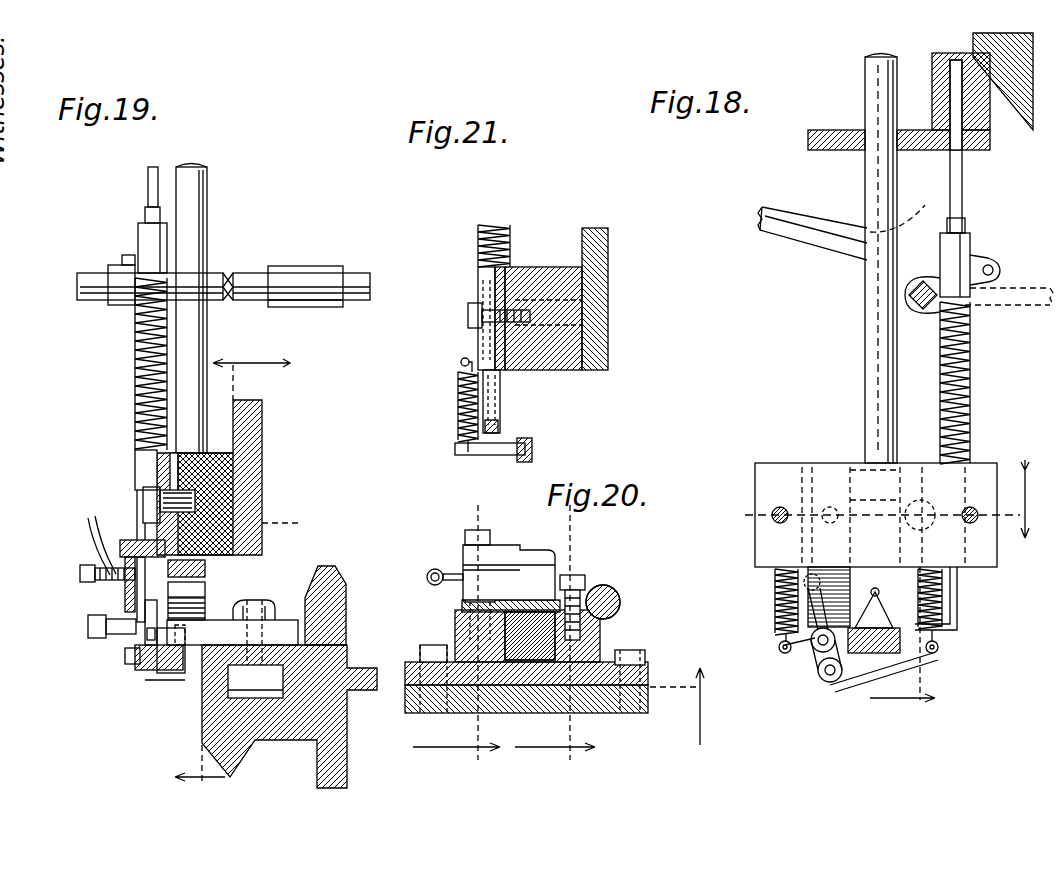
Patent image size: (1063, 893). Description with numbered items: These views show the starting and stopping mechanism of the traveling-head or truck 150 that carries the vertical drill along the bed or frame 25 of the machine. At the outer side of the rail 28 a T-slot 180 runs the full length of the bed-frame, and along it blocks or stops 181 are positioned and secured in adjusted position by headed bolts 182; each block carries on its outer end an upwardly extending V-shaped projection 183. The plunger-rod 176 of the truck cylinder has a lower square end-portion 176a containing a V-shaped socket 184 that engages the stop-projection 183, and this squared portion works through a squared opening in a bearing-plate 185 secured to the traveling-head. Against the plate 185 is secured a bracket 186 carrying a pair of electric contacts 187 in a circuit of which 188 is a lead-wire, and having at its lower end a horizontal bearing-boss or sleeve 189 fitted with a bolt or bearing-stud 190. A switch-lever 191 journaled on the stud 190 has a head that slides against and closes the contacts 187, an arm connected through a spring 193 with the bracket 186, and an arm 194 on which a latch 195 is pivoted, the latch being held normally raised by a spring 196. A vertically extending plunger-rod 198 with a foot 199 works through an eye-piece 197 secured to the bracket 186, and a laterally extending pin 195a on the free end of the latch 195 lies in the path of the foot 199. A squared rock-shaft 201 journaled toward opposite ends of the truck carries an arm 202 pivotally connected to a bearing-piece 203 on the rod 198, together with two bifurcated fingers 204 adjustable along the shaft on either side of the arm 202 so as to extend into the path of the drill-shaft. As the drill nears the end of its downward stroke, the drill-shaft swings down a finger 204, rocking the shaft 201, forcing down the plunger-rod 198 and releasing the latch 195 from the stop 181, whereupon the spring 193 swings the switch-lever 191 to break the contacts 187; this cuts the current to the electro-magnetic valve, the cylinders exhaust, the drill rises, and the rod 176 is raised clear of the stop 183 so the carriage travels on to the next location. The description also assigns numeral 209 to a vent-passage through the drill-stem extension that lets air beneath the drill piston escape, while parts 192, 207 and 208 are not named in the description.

In FIG. 19, the bed or frame 25 is at (340, 748).
In FIG. 19, the rail 28 is at (340, 578).
In FIG. 18, the truck 150 is at (920, 109).
In FIG. 19, the plunger-rod 176 is at (196, 218).
In FIG. 18, the plunger-rod 176 is at (868, 108).
In FIG. 19, the lower square end-portion 176a is at (205, 568).
In FIG. 20, the lower square end-portion 176a is at (465, 625).
In FIG. 18, the lower square end-portion 176a is at (858, 575).
In FIG. 19, the T-slot 180 is at (203, 697).
In FIG. 19, the block or stop 181 is at (232, 632).
In FIG. 18, the block or stop 181 is at (855, 685).
In FIG. 19, the headed bolt 182 is at (348, 668).
In FIG. 19, the V-shaped projection 183 is at (205, 603).
In FIG. 18, the V-shaped projection 183 is at (878, 655).
In FIG. 18, the V-shaped socket 184 is at (878, 590).
In FIG. 19, the bearing-plate 185 is at (235, 470).
In FIG. 21, the bearing-plate 185 is at (540, 272).
In FIG. 20, the bearing-plate 185 is at (595, 648).
In FIG. 18, the bearing-plate 185 is at (830, 465).
In FIG. 19, the bracket 186 is at (137, 535).
In FIG. 20, the bracket 186 is at (540, 566).
In FIG. 18, the bracket 186 is at (812, 590).
In FIG. 19, the electric contacts 187 is at (120, 598).
In FIG. 18, the electric contacts 187 is at (820, 593).
In FIG. 19, the lead-wire 188 is at (80, 548).
In FIG. 19, the bearing-boss or sleeve 189 is at (137, 622).
In FIG. 19, the bearing-stud 190 is at (88, 630).
In FIG. 18, the bearing-stud 190 is at (818, 648).
In FIG. 19, the switch-lever 191 is at (145, 640).
In FIG. 18, the switch-lever 191 is at (800, 640).
In FIG. 19, the block 192 is at (140, 662).
In FIG. 18, the block 192 is at (782, 652).
In FIG. 20, the spring 193 is at (434, 569).
In FIG. 18, the spring 193 is at (776, 595).
In FIG. 19, the arm 194 is at (150, 682).
In FIG. 18, the arm 194 is at (822, 680).
In FIG. 19, the latch 195 is at (172, 675).
In FIG. 21, the latch 195 is at (532, 452).
In FIG. 18, the latch 195 is at (935, 660).
In FIG. 21, the pin 195a is at (488, 455).
In FIG. 18, the pin 195a is at (940, 650).
In FIG. 21, the spring 196 is at (458, 405).
In FIG. 18, the spring 196 is at (945, 597).
In FIG. 21, the eye-piece 197 is at (470, 292).
In FIG. 20, the eye-piece 197 is at (582, 588).
In FIG. 18, the eye-piece 197 is at (962, 483).
In FIG. 19, the plunger-rod 198 is at (135, 372).
In FIG. 21, the plunger-rod 198 is at (495, 224).
In FIG. 20, the plunger-rod 198 is at (620, 604).
In FIG. 18, the plunger-rod 198 is at (972, 370).
In FIG. 21, the foot 199 is at (500, 426).
In FIG. 18, the foot 199 is at (958, 630).
In FIG. 19, the rock-shaft 201 is at (90, 297).
In FIG. 18, the rock-shaft 201 is at (905, 290).
In FIG. 19, the arm 202 is at (122, 270).
In FIG. 18, the arm 202 is at (960, 300).
In FIG. 19, the bearing-piece 203 is at (148, 245).
In FIG. 18, the bearing-piece 203 is at (970, 262).
In FIG. 19, the bifurcated fingers 204 is at (318, 260).
In FIG. 18, the bar 207 is at (800, 222).
In FIG. 18, the guide 208 is at (908, 206).
In FIG. 18, the vent-passage 209 is at (1013, 290).